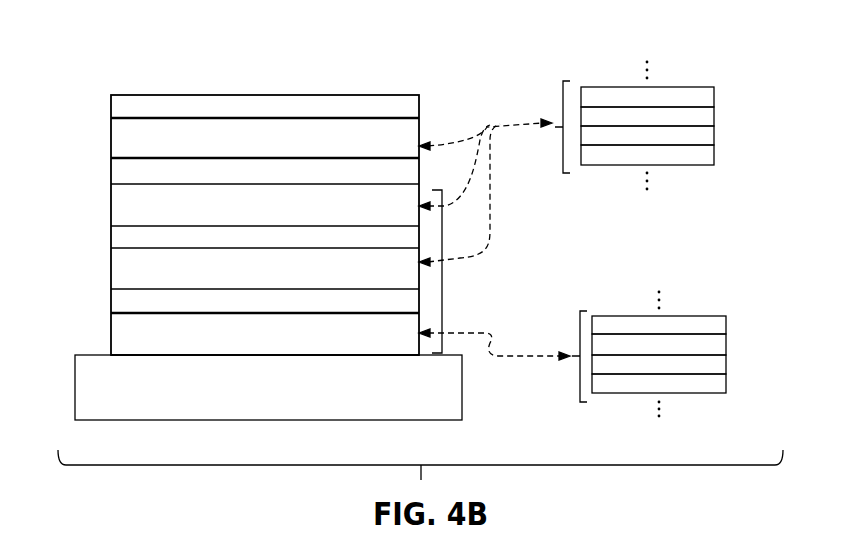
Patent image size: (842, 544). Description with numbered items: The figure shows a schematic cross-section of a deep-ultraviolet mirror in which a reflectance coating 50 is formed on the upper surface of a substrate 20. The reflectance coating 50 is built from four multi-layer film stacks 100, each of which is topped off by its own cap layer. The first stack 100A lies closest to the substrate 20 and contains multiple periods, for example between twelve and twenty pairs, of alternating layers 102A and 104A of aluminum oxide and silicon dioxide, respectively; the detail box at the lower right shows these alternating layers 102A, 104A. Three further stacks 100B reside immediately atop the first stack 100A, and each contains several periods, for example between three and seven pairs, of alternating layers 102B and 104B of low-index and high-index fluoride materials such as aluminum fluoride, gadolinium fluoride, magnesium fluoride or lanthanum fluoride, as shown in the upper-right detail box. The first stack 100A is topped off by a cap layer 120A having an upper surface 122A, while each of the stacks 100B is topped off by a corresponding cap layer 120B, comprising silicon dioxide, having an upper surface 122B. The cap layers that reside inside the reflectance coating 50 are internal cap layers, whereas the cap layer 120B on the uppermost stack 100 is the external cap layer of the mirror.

The substrate 20 is at (75, 393).
The reflectance coating 50 is at (95, 148).
The multi-layer film stack 100 is at (442, 305).
The first multi-layer film stack 100A is at (248, 342).
The multi-layer film stacks 100B is at (248, 146).
The cap layer 120A is at (248, 309).
The cap layer 120B is at (248, 114).
The upper surface 122A is at (393, 290).
The upper surface 122B is at (372, 226).
The alternating layers 102A is at (726, 345).
The alternating layers 102B is at (714, 116).
The alternating layers 104A is at (726, 325).
The alternating layers 104B is at (714, 97).